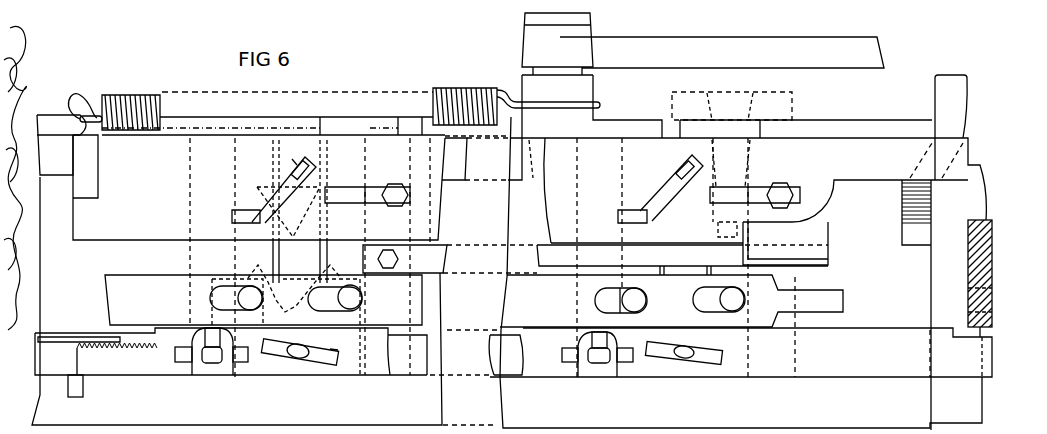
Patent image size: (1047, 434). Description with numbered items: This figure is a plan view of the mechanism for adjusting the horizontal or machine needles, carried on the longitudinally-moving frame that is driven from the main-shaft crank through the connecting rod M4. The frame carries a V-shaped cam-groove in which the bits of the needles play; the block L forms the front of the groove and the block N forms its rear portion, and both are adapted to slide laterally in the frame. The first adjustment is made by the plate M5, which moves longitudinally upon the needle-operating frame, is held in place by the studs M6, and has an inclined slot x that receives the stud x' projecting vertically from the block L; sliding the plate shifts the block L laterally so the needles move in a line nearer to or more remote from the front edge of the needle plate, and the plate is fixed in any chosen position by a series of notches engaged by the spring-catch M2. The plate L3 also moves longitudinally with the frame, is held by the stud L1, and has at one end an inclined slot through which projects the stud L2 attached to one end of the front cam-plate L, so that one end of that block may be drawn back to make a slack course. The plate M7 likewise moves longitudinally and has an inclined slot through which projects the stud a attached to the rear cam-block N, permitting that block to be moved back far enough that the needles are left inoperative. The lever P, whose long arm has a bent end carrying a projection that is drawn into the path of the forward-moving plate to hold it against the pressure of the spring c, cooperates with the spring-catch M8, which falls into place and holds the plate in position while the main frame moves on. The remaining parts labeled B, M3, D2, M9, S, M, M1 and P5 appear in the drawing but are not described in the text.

The bed frame B is at (509, 251).
The stop block M3 is at (61, 145).
The plate M7 is at (450, 200).
The slide bar D2 is at (517, 127).
The spring c is at (297, 83).
The rod M4 is at (703, 44).
The lever pivot M9 is at (732, 135).
The lever P is at (934, 252).
The shaft S is at (985, 276).
The block N is at (467, 196).
The stud a is at (297, 163).
The bolt M is at (562, 228).
The pins M1 is at (500, 265).
The spring-catch M8 is at (682, 254).
The plate L3 is at (474, 301).
The stud L1 is at (236, 302).
The stud L2 is at (322, 327).
The block L is at (294, 288).
The spring-catch M2 is at (231, 351).
The studs M6 is at (404, 352).
The plate M5 is at (491, 356).
The stud x' is at (298, 346).
The inclined slot x is at (338, 348).
The stop P5 is at (77, 386).